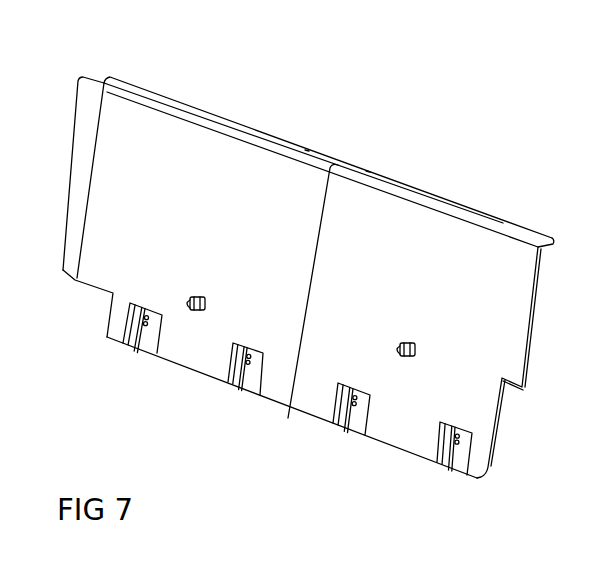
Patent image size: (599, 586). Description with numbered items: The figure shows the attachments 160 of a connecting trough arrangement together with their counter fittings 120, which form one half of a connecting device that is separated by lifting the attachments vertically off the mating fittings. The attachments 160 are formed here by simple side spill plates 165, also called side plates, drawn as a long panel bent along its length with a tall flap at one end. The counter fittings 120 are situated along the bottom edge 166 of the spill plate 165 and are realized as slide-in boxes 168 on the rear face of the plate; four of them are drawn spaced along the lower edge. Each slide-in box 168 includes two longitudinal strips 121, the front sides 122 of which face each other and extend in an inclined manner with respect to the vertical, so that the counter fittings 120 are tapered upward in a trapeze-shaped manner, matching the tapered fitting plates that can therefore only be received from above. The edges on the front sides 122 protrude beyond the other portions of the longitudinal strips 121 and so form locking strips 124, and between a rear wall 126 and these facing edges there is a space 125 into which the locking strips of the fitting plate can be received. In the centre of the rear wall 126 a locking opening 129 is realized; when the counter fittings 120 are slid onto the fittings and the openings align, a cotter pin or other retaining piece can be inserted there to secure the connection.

The attachment 160 is at (424, 96).
The side spill plate 165 is at (240, 100).
The bottom edge 166 is at (188, 370).
The counter fitting 120 is at (122, 360).
The longitudinal strip 121 is at (343, 412).
The front side 122 is at (345, 410).
The locking strip 124 is at (140, 337).
The space 125 is at (152, 312).
The rear wall 126 is at (148, 337).
The locking opening 129 is at (248, 350).
The slide-in box 168 is at (449, 480).